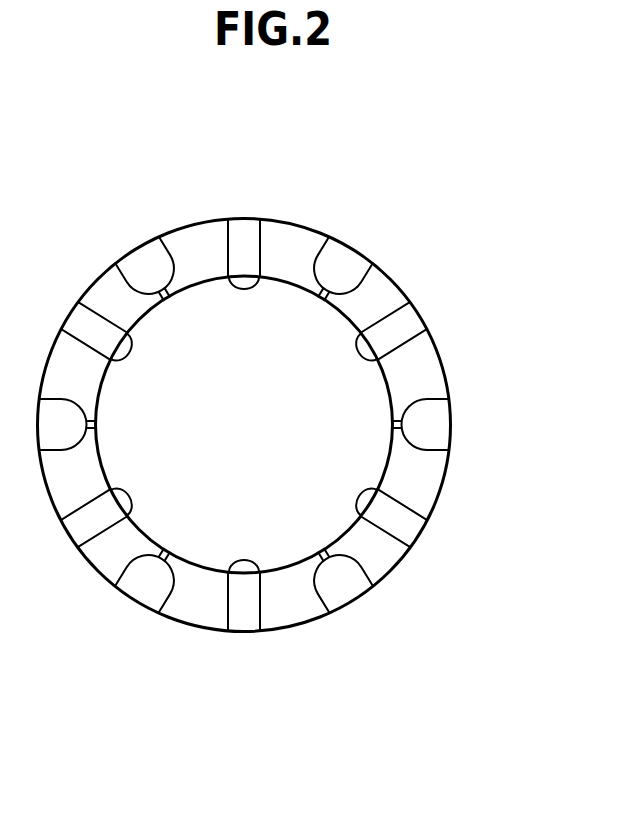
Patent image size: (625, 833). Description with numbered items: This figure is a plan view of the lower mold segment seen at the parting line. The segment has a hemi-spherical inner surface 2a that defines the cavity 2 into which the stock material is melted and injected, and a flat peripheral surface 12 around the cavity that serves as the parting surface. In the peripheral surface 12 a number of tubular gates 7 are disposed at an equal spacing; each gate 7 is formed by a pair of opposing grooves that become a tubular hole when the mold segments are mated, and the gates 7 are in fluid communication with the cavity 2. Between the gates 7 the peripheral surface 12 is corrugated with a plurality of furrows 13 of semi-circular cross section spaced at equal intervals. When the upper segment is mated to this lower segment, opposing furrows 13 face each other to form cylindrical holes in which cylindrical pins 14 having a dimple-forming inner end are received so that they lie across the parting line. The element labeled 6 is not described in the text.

The cavity 2 is at (282, 434).
The hemi-spherical inner surface 2a is at (200, 535).
The semi-closed slot 6 is at (425, 427).
The tubular gate 7 is at (392, 425).
The flat peripheral surface 12 is at (427, 367).
The furrow 13 is at (258, 244).
The cylindrical pin 14 is at (393, 325).